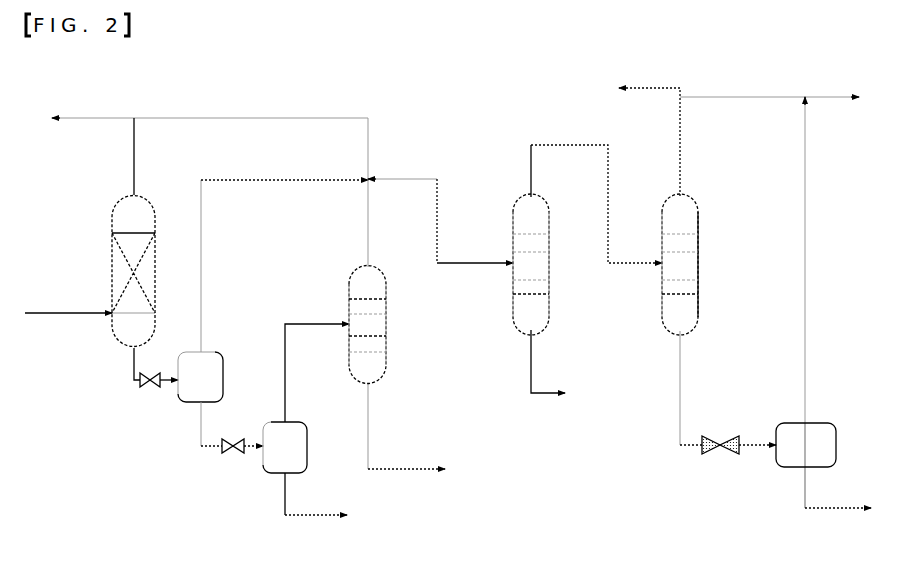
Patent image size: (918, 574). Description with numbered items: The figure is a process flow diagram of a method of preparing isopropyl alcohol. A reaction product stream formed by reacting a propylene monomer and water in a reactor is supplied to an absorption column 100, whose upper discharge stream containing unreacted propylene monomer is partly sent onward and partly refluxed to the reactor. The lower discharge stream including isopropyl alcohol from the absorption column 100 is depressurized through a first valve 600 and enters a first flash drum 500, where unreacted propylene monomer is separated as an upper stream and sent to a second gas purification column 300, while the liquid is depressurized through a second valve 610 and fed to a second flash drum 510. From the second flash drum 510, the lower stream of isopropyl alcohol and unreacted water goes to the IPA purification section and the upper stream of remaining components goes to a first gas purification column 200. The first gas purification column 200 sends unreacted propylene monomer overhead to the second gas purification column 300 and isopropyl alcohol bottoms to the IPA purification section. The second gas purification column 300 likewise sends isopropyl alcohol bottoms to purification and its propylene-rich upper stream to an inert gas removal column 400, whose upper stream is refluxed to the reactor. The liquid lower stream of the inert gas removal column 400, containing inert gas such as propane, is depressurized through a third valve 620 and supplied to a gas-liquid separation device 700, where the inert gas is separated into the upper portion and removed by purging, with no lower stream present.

The absorption column 100 is at (112, 222).
The first gas purification column 200 is at (386, 325).
The second gas purification column 300 is at (549, 305).
The inert gas removal column 400 is at (698, 272).
The first flash drum 500 is at (183, 404).
The second flash drum 510 is at (266, 474).
The first valve 600 is at (142, 386).
The second valve 610 is at (228, 450).
The third valve 620 is at (704, 448).
The gas-liquid separation device 700 is at (818, 423).